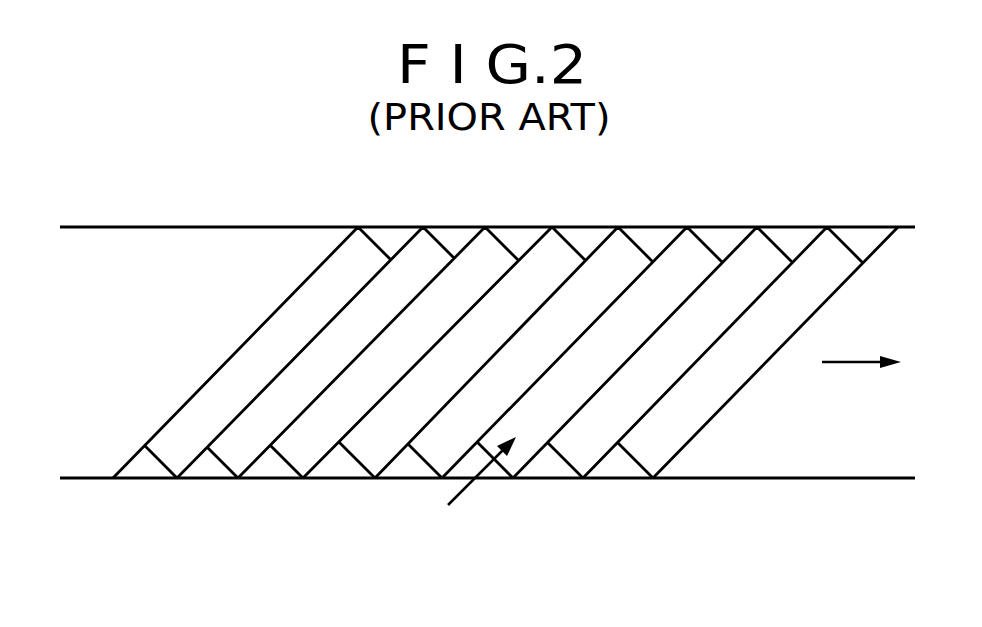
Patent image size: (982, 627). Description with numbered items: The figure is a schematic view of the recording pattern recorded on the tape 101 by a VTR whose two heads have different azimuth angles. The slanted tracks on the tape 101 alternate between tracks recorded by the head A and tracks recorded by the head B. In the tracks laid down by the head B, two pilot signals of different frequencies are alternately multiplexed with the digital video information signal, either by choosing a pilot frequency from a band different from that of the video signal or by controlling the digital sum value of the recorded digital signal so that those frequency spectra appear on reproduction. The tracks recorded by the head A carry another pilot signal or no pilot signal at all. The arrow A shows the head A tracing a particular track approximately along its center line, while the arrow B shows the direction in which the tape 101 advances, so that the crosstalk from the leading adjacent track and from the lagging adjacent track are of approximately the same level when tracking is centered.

The tape 101 is at (205, 227).
The head A / arrow A is at (470, 485).
The head B / arrow B is at (850, 362).